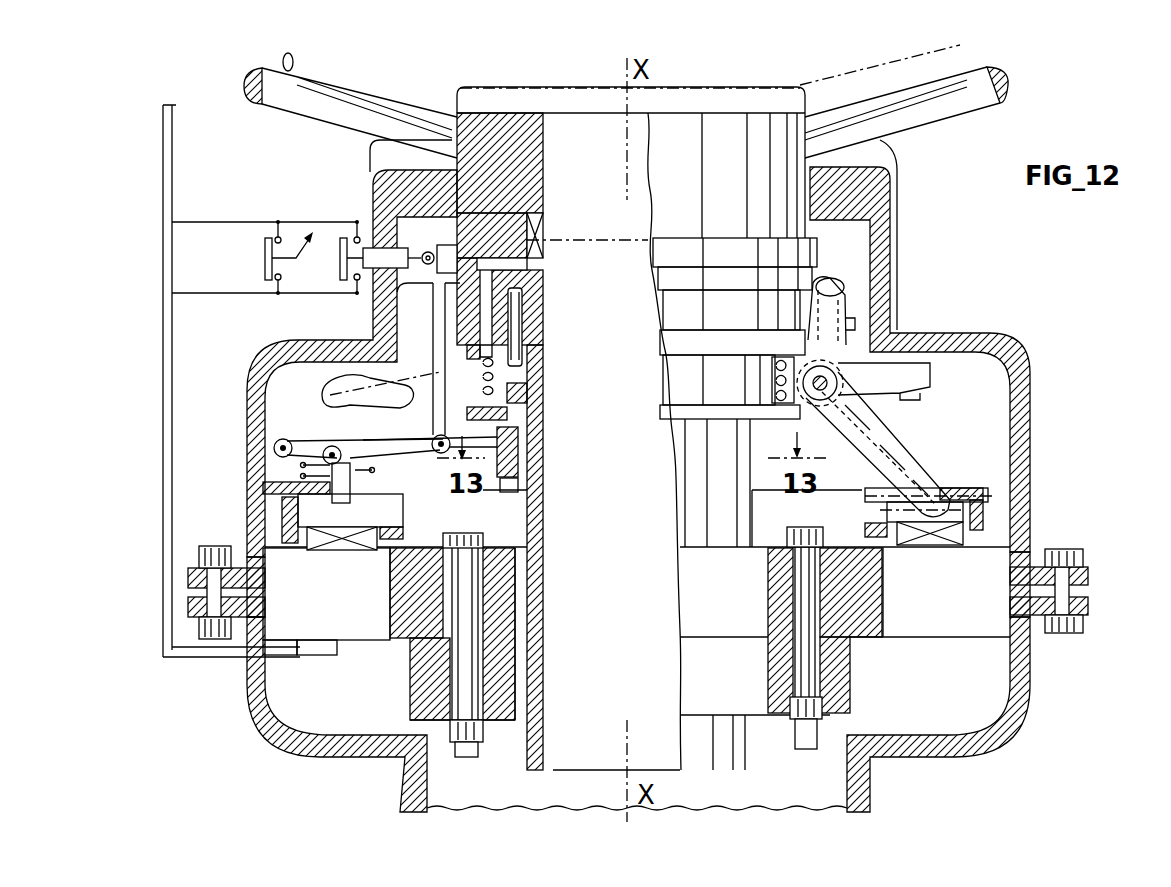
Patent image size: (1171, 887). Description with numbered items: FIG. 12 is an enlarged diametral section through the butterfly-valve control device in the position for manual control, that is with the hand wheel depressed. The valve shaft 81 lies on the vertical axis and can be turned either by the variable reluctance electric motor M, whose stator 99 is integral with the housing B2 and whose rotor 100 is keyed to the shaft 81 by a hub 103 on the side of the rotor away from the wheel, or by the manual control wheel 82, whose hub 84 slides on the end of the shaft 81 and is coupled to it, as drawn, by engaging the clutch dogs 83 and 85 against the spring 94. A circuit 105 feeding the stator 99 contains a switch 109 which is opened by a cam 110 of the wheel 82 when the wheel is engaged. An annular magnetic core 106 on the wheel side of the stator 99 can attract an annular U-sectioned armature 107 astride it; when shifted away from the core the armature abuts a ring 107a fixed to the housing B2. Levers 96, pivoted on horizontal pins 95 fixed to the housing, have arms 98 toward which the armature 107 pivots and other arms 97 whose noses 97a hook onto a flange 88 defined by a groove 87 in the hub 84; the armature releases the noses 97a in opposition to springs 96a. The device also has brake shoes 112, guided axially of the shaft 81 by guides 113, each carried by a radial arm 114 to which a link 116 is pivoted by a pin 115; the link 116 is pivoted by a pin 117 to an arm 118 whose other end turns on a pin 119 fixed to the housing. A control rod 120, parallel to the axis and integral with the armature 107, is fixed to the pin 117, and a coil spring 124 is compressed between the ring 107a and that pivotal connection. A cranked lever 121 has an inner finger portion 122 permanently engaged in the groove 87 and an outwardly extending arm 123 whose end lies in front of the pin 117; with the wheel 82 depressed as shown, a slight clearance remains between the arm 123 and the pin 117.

The shaft 81 is at (538, 562).
The manual control wheel 82 is at (935, 118).
The clutch dog 83 is at (552, 257).
The hub 84 is at (722, 128).
The clutch dog 85 is at (540, 240).
The groove 87 is at (455, 283).
The flange 88 is at (835, 280).
The spring 94 is at (766, 373).
The pivot pins 95 is at (832, 382).
The levers 96 is at (906, 455).
The springs 96a is at (843, 305).
The lever arms 97 is at (858, 345).
The noses 97a is at (850, 270).
The lever arms 98 is at (925, 492).
The stator 99 is at (636, 605).
The rotor 100 is at (418, 618).
The hub 103 is at (428, 688).
The circuit 105 is at (228, 658).
The annular magnetic core 106 is at (325, 545).
The annular magnetic armature 107 is at (970, 505).
The ring 107a is at (268, 484).
The switch 109 is at (360, 228).
The cam 110 is at (438, 244).
The brake shoes 112 is at (520, 460).
The guides 113 is at (520, 490).
The support arm 114 is at (520, 436).
The pin 115 is at (440, 436).
The link 116 is at (415, 457).
The pin 117 is at (357, 462).
The arm 118 is at (306, 445).
The pin 119 is at (275, 440).
The control rod 120 is at (378, 505).
The cranked lever 121 is at (444, 378).
The inner finger portion 122 is at (428, 277).
The outwardly extending arm 123 is at (372, 380).
The coil spring 124 is at (300, 475).
The housing B2 is at (1036, 479).
The variable reluctance electric motor M is at (868, 645).